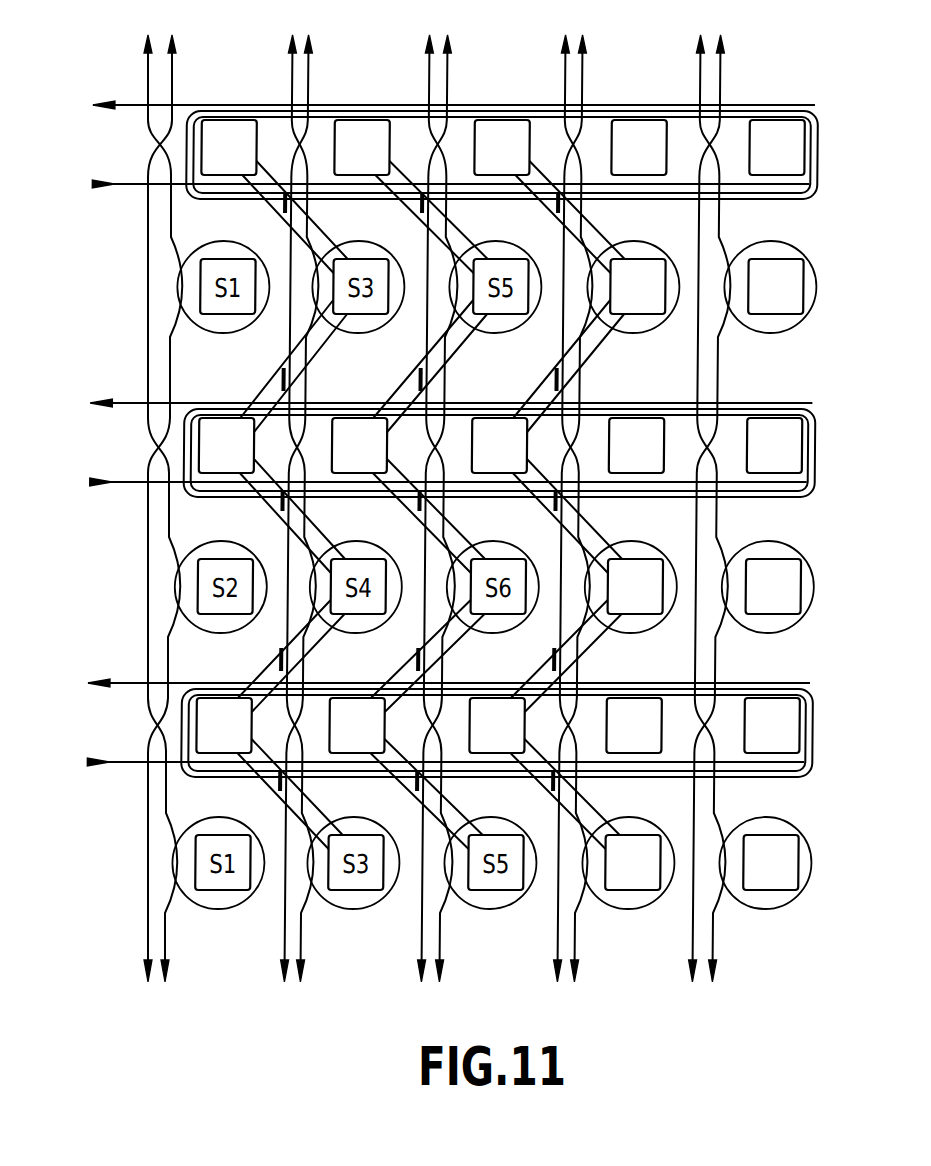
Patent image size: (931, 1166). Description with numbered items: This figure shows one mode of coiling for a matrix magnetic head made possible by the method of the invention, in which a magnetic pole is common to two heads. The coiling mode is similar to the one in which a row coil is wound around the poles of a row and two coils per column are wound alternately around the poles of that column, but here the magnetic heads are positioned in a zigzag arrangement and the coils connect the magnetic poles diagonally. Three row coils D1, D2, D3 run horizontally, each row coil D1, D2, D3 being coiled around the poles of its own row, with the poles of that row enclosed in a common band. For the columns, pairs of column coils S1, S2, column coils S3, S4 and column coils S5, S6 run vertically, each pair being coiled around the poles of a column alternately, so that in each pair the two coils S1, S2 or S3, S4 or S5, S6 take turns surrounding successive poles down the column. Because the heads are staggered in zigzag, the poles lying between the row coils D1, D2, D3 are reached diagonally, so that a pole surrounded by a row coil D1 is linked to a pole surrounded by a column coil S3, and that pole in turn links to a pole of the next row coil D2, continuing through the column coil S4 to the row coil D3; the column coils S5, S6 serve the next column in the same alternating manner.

The column coil S1 is at (149, 512).
The column coil S2 is at (176, 512).
The column coil S3 is at (283, 512).
The column coil S4 is at (312, 512).
The column coil S5 is at (422, 512).
The column coil S6 is at (450, 512).
The row coil D1 is at (431, 150).
The row coil D2 is at (429, 448).
The row coil D3 is at (426, 728).